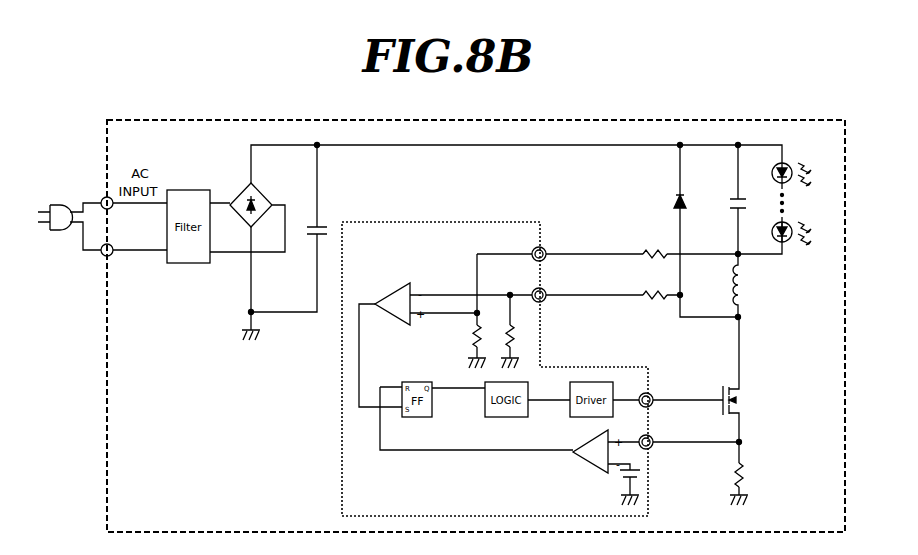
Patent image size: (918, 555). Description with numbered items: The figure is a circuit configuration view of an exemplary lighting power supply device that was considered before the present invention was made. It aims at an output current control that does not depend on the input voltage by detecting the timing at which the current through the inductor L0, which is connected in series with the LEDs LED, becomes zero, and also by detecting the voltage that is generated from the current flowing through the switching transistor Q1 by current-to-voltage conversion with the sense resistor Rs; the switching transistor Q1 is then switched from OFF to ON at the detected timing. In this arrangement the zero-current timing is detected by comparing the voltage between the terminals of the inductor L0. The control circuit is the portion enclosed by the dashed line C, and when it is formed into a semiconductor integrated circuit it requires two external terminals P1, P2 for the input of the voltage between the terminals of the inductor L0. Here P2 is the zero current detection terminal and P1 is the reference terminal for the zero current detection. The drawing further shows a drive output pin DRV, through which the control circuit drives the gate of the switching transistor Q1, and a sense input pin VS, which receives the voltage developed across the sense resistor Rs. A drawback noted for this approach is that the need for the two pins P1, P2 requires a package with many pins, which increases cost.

The reference terminal P1 is at (546, 246).
The zero current detection terminal P2 is at (546, 302).
The drive output pin DRV is at (668, 395).
The current sense input pin VS is at (652, 448).
The switching transistor Q1 is at (745, 379).
The sense resistor Rs is at (748, 473).
The inductor L0 is at (747, 285).
The LEDs LED is at (774, 219).
The control circuit C is at (342, 390).